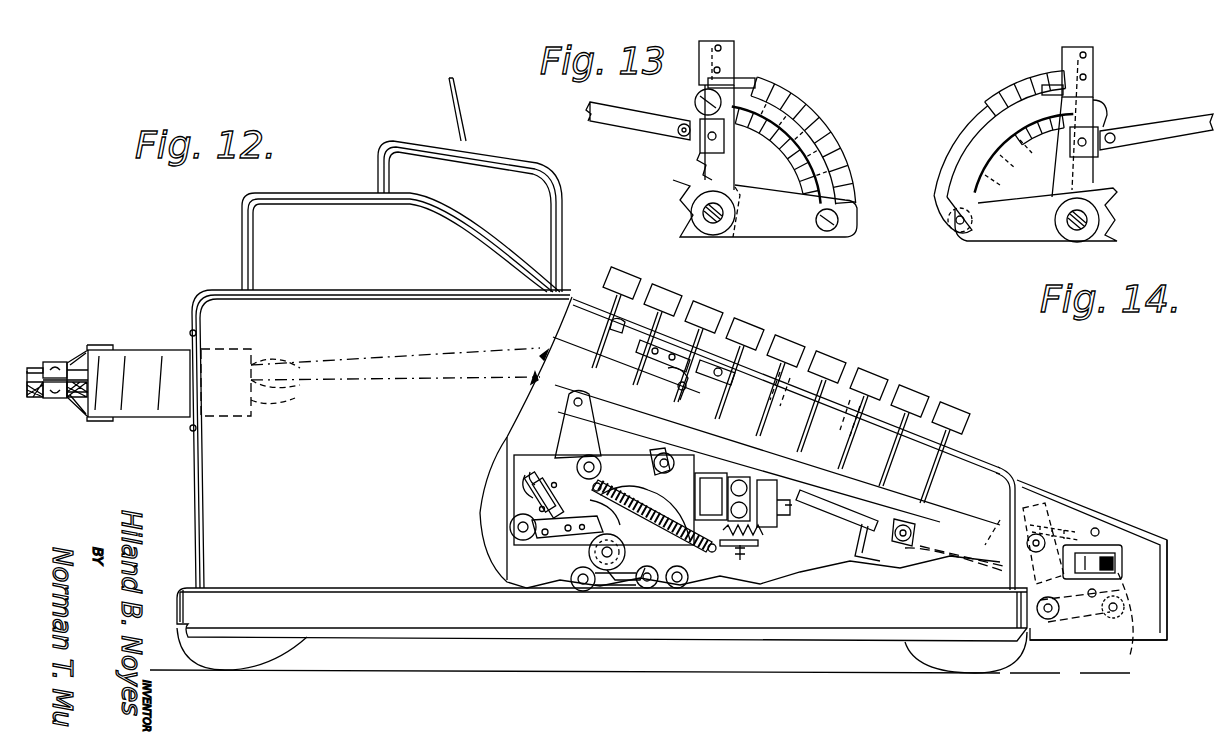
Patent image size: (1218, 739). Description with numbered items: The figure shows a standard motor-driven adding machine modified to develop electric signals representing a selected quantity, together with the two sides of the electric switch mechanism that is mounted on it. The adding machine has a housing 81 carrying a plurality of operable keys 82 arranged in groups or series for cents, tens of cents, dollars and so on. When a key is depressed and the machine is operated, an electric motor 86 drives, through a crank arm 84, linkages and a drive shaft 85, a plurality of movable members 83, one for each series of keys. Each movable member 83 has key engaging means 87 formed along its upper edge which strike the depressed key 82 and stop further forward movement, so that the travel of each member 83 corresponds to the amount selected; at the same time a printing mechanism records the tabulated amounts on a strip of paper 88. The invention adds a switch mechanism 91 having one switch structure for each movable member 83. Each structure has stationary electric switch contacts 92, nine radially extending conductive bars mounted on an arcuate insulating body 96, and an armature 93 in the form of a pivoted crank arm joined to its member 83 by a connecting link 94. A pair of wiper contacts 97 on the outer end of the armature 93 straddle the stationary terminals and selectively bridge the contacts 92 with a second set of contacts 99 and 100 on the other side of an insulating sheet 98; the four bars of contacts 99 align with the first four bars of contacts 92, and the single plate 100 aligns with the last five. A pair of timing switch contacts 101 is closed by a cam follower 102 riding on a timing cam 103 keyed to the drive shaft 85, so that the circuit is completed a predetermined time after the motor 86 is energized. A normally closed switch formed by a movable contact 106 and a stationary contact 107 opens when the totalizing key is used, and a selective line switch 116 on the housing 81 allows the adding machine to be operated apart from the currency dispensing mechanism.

In FIG. 12, the housing 81 is at (490, 290).
In FIG. 12, the operable keys 82 is at (623, 273).
In FIG. 12, the movable member 83 is at (804, 500).
In FIG. 12, the crank arm 84 is at (577, 430).
In FIG. 12, the drive shaft 85 is at (608, 567).
In FIG. 12, the electric motor 86 is at (520, 465).
In FIG. 12, the key engaging means 87 is at (752, 375).
In FIG. 12, the strip of paper 88 is at (450, 79).
In FIG. 12, the switch mechanism 91 is at (1068, 624).
In FIG. 12, the stationary electric switch contacts 92 is at (1123, 587).
In FIG. 13, the stationary electric switch contacts 92 is at (822, 121).
In FIG. 12, the armature 93 is at (1048, 507).
In FIG. 13, the armature 93 is at (737, 47).
In FIG. 14, the armature 93 is at (1087, 83).
In FIG. 12, the connecting link 94 is at (923, 546).
In FIG. 13, the connecting link 94 is at (650, 120).
In FIG. 14, the connecting link 94 is at (1183, 130).
In FIG. 12, the arcuate insulating body 96 is at (1130, 652).
In FIG. 13, the arcuate insulating body 96 is at (850, 172).
In FIG. 14, the arcuate insulating body 96 is at (950, 200).
In FIG. 13, the wiper contacts 97 is at (748, 76).
In FIG. 14, the wiper contacts 97 is at (1057, 85).
In FIG. 13, the insulating sheet 98 is at (793, 104).
In FIG. 14, the stationary contacts 99 is at (1030, 87).
In FIG. 14, the contact 100 is at (967, 140).
In FIG. 12, the timing switch contacts 101 is at (597, 487).
In FIG. 12, the cam follower 102 is at (515, 525).
In FIG. 12, the timing cam 103 is at (567, 573).
In FIG. 12, the movable contact 106 is at (703, 360).
In FIG. 12, the stationary contact 107 is at (740, 373).
In FIG. 12, the selective line switch 116 is at (1110, 547).